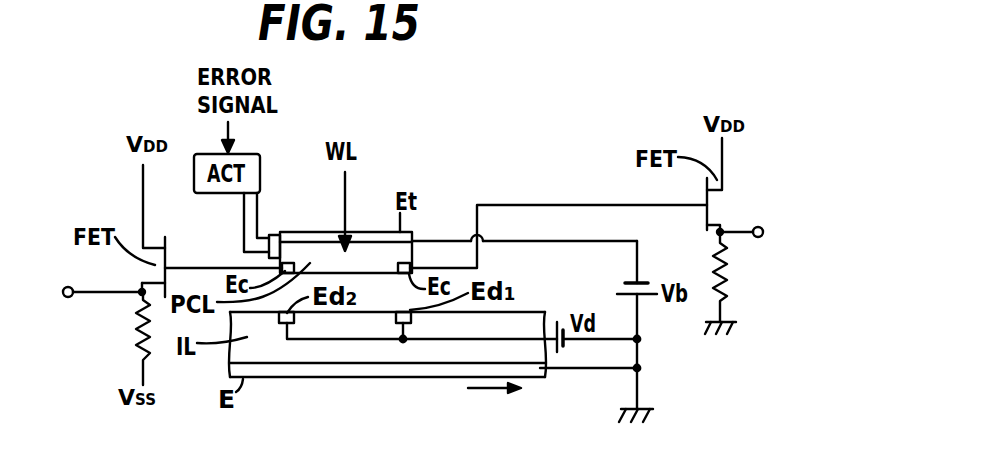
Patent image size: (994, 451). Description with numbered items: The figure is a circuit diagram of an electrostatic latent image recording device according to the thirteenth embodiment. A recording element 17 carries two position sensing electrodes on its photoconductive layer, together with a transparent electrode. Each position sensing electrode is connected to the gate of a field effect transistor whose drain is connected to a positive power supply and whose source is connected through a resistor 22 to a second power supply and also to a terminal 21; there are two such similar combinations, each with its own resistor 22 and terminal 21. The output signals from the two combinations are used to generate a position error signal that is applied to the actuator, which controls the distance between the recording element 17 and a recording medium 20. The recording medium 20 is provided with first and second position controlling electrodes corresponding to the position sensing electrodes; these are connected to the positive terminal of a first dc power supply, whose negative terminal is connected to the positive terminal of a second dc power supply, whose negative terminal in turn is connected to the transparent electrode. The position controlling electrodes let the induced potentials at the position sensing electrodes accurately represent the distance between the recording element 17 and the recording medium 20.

The recording element 17 is at (307, 248).
The recording medium 20 is at (530, 325).
The terminal 21 is at (66, 287).
The resistor 22 is at (436, 308).